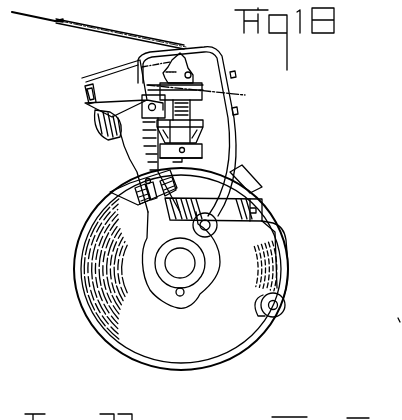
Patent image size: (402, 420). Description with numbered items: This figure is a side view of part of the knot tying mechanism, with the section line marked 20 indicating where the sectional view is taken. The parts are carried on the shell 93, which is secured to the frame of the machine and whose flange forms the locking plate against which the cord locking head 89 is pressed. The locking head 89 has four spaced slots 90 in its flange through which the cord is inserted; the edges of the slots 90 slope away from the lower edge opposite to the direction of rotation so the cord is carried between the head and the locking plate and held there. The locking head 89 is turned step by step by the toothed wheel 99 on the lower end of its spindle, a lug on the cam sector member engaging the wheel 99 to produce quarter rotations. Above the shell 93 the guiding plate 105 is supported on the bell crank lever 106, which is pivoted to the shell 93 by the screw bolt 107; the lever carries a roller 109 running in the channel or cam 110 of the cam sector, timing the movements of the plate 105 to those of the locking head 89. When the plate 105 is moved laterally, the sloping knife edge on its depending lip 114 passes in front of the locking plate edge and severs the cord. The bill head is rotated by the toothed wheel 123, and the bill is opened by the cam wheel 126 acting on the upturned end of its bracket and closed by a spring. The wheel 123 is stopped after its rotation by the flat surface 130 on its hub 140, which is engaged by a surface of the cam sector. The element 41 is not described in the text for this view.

The section line 20 is at (92, 32).
The shaft 41 is at (187, 265).
The cord locking head 89 is at (113, 63).
The slots 90 is at (90, 97).
The shell 93 is at (100, 292).
The toothed wheel 99 is at (135, 193).
The guiding plate 105 is at (200, 50).
The bell crank lever 106 is at (203, 148).
The screw bolt 107 is at (262, 203).
The roller 109 is at (240, 234).
The channel or cam 110 is at (388, 327).
The depending lip 114 is at (140, 77).
The toothed wheel 123 is at (207, 127).
The cam wheel 126 is at (190, 78).
The flat surface 130 is at (203, 155).
The hub 140 is at (203, 152).